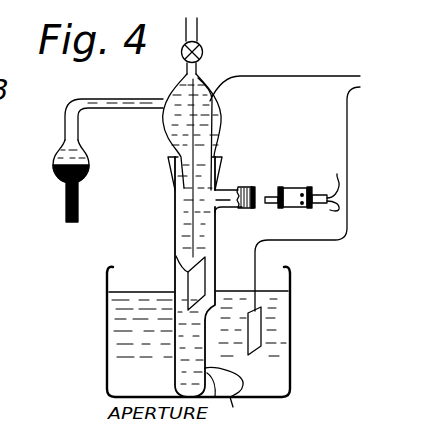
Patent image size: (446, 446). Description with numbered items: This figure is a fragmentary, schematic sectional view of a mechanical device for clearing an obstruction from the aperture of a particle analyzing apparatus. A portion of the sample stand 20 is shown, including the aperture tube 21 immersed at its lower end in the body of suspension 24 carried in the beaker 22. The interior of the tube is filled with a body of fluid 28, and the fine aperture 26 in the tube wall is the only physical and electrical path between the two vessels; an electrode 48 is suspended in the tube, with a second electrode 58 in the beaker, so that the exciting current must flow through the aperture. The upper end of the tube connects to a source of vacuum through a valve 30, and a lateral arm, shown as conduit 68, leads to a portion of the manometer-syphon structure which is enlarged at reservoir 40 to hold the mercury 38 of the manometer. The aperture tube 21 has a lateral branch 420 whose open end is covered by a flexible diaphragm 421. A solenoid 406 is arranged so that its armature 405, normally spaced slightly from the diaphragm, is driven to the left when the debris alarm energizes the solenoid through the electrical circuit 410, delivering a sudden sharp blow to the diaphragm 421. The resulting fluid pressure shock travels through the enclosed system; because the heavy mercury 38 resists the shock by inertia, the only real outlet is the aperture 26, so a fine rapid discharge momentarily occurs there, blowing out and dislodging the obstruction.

The sample stand 20 is at (122, 88).
The aperture tube 21 is at (175, 187).
The beaker 22 is at (107, 316).
The body of suspension 24 is at (118, 376).
The aperture 26 is at (236, 400).
The body of fluid 28 is at (175, 222).
The valve 30 is at (203, 51).
The mercury 38 is at (64, 206).
The reservoir 40 is at (54, 161).
The electrode 48 is at (178, 256).
The electrode plate 58 is at (258, 332).
The conduit 68 is at (347, 118).
The armature 405 is at (276, 187).
The solenoid 406 is at (294, 187).
The electrical circuit 410 is at (347, 181).
The lateral branch 420 is at (230, 188).
The flexible diaphragm 421 is at (258, 208).